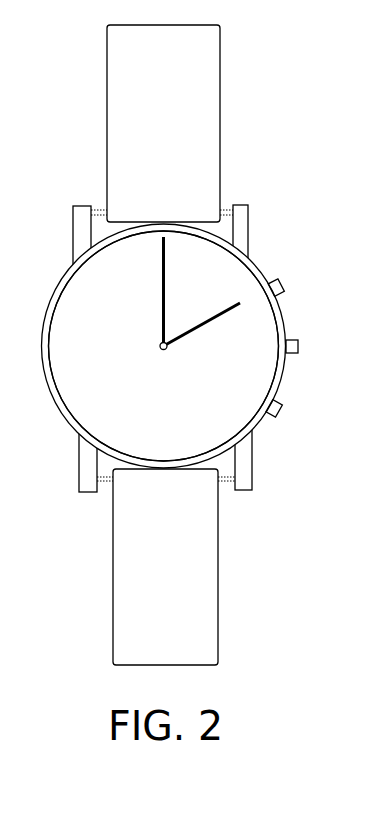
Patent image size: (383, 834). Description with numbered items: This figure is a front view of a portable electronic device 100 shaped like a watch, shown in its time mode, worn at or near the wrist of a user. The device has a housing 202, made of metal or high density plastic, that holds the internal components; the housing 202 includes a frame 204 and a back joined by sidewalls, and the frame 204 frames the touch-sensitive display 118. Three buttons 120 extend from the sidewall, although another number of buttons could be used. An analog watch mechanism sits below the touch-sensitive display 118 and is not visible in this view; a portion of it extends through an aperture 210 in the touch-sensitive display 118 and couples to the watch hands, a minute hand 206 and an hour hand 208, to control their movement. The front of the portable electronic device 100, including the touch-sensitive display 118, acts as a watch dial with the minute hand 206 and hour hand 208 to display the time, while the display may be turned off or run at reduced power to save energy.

The portable electronic device 100 is at (303, 492).
The touch-sensitive display 118 is at (263, 383).
The buttons 120 is at (284, 282).
The housing 202 is at (256, 262).
The frame 204 is at (285, 315).
The minute hand 206 is at (163, 280).
The hour hand 208 is at (222, 317).
The aperture 210 is at (160, 348).